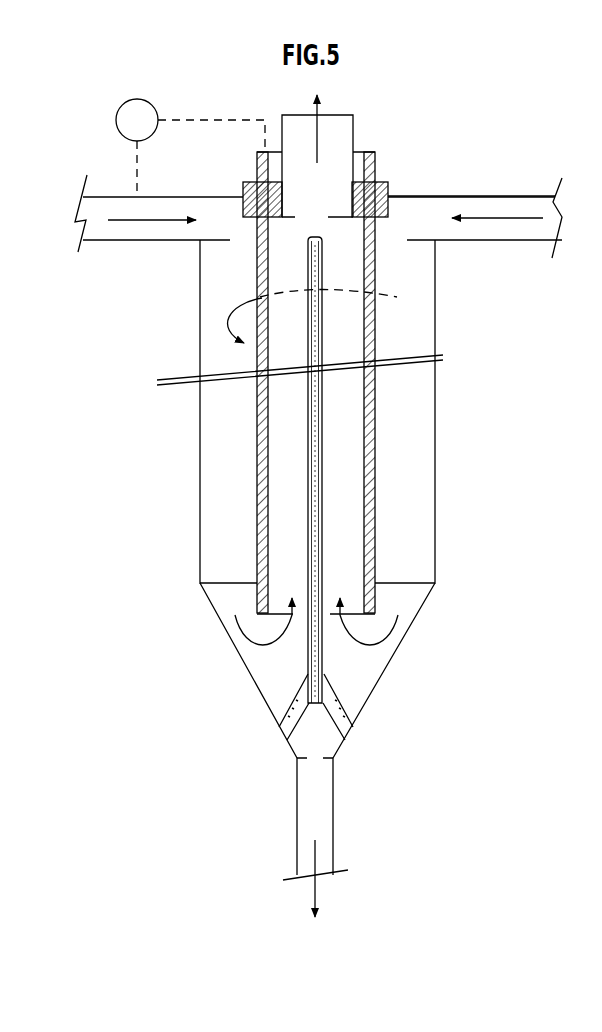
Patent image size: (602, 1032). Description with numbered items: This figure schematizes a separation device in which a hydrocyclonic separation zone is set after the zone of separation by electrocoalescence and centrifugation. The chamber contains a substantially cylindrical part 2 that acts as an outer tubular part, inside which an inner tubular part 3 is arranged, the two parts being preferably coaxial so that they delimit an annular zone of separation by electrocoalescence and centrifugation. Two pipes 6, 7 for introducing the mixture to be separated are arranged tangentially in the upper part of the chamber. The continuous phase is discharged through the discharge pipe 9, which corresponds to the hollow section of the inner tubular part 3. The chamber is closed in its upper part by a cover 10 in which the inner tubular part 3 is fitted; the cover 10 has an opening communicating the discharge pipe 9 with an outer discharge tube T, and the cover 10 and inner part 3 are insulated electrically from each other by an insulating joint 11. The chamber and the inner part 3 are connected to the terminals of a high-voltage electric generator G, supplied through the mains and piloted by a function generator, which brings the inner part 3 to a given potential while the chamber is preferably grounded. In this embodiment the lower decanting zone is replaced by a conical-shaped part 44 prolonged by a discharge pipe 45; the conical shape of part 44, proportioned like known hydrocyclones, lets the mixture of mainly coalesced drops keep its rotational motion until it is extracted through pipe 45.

The cylindrical part 2 is at (200, 427).
The inner tubular part 3 is at (257, 472).
The pipe for introducing the mixture 6 is at (502, 210).
The pipe for introducing the mixture 7 is at (120, 205).
The discharge pipe 9 is at (288, 522).
The cover 10 is at (420, 198).
The insulating joint 11 is at (390, 180).
The conical-shaped part 44 is at (252, 683).
The discharge pipe 45 is at (297, 807).
The high-voltage electric generator G is at (190, 148).
The outer discharge tube T is at (353, 122).